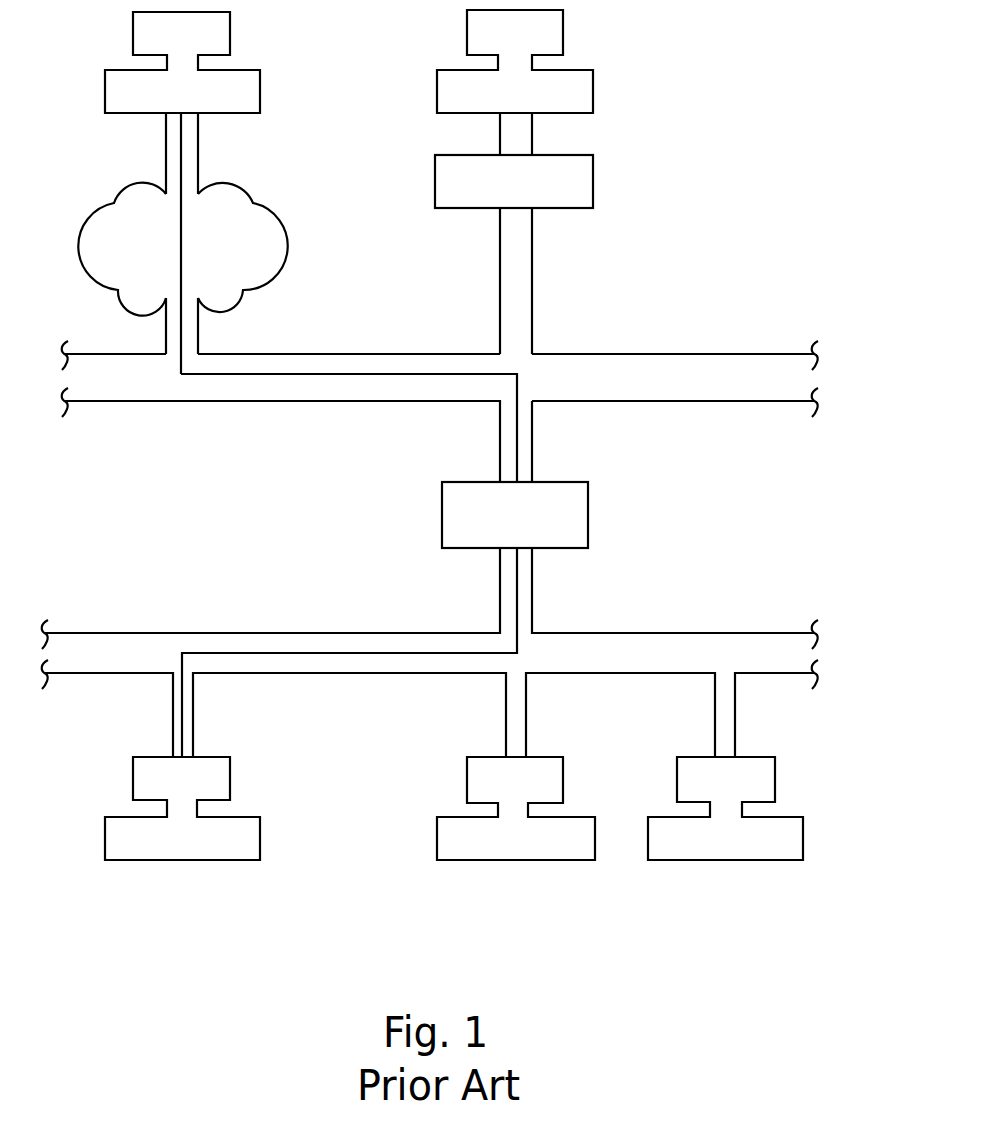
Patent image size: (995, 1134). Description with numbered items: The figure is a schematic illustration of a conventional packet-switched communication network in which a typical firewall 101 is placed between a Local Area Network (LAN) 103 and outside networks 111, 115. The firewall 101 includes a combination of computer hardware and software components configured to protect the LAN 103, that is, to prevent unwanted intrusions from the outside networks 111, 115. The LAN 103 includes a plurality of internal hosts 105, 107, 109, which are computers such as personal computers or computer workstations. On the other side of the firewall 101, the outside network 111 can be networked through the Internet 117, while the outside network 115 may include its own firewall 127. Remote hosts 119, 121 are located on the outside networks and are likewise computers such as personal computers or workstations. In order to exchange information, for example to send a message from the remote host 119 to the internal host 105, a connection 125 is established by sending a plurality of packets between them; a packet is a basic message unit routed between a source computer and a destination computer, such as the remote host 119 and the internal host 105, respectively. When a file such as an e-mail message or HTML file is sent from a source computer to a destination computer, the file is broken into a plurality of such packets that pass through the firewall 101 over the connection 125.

The firewall 101 is at (588, 515).
The Local Area Network (LAN) 103 is at (707, 604).
The internal host 105 is at (260, 840).
The internal host 107 is at (437, 826).
The internal host 109 is at (803, 838).
The outside network 111 is at (212, 150).
The outside network 115 is at (550, 282).
The Internet 117 is at (287, 240).
The remote host 119 is at (260, 83).
The remote host 121 is at (593, 86).
The connection 125 is at (305, 374).
The firewall 127 is at (593, 183).